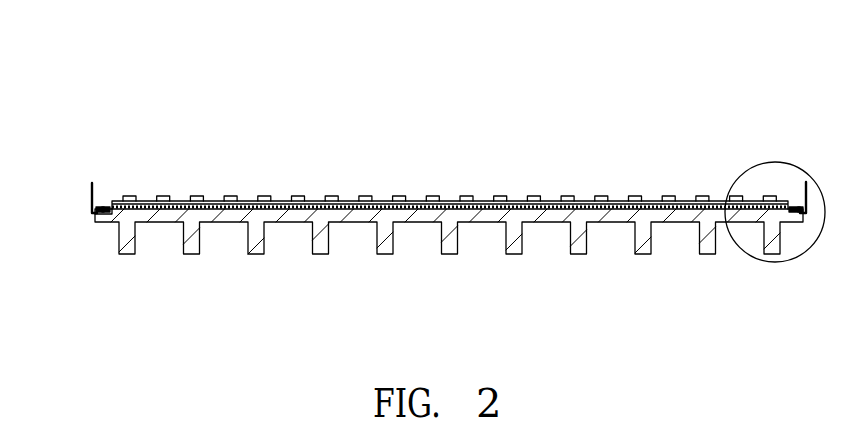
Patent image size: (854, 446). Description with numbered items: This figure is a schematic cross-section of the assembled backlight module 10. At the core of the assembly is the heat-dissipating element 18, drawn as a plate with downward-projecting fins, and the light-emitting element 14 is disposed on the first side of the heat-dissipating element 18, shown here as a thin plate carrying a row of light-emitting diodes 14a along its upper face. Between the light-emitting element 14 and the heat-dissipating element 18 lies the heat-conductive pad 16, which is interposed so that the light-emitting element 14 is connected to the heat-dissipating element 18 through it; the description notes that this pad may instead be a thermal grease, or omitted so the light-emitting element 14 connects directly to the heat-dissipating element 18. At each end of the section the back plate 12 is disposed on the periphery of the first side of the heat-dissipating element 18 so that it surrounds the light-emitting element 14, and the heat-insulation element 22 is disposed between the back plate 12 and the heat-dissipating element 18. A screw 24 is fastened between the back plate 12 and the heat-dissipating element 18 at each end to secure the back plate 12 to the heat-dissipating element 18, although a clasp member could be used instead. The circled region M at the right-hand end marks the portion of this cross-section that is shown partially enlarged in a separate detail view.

The backlight module 10 is at (156, 51).
The back plate 12 is at (91, 186).
The light-emitting element 14 is at (317, 203).
The light-emitting diodes 14a is at (332, 197).
The heat-conductive pad 16 is at (222, 207).
The heat-dissipating element 18 is at (223, 222).
The heat-insulation element 22 is at (95, 215).
The screw 24 is at (103, 205).
The partially enlarged region M is at (740, 173).